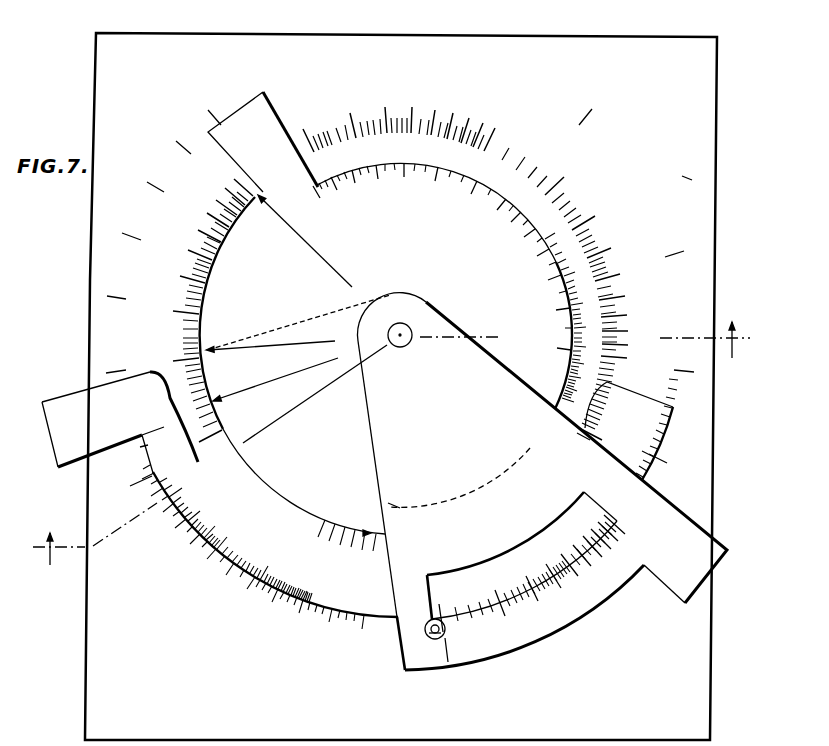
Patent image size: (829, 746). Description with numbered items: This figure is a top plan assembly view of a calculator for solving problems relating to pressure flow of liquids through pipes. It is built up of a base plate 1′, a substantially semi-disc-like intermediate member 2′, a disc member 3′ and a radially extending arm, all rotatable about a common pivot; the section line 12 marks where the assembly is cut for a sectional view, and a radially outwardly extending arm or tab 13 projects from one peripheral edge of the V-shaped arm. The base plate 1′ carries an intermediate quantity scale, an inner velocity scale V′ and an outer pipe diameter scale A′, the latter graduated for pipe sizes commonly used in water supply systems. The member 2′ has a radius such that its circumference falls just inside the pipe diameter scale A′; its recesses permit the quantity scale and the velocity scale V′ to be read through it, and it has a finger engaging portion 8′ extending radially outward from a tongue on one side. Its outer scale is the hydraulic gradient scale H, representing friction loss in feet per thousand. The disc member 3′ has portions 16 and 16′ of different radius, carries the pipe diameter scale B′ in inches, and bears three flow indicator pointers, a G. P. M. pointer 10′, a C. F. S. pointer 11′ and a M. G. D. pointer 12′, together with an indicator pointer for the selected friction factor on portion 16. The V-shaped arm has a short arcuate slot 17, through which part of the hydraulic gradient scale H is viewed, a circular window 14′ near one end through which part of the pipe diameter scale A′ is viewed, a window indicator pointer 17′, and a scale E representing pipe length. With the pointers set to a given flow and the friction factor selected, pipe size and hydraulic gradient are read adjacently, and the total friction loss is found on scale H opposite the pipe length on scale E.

The base plate 1′ is at (113, 91).
The semi-disc-like intermediate member 2′ is at (268, 513).
The disc member 3′ is at (459, 382).
The finger engaging portion 8′ is at (64, 398).
The G. P. M. pointer 10′ is at (332, 262).
The C. F. S. pointer 11′ is at (320, 340).
The M. G. D. pointer 12′ is at (340, 362).
The section line 12 is at (391, 443).
The arm 13 is at (668, 568).
The circular aperture or window 14′ is at (435, 640).
The portion of disc member 16 is at (254, 468).
The portion of disc member 16′ is at (563, 292).
The arcuate slot or window 17 is at (492, 567).
The window indicator pointer 17′ is at (448, 664).
The pipe diameter scale A is at (123, 237).
The outer pipe diameter scale A′ is at (645, 174).
The pipe diameter scale B′ is at (458, 191).
The inner velocity scale V′ is at (542, 220).
The scale E is at (483, 626).
The hydraulic gradient scale H is at (283, 590).